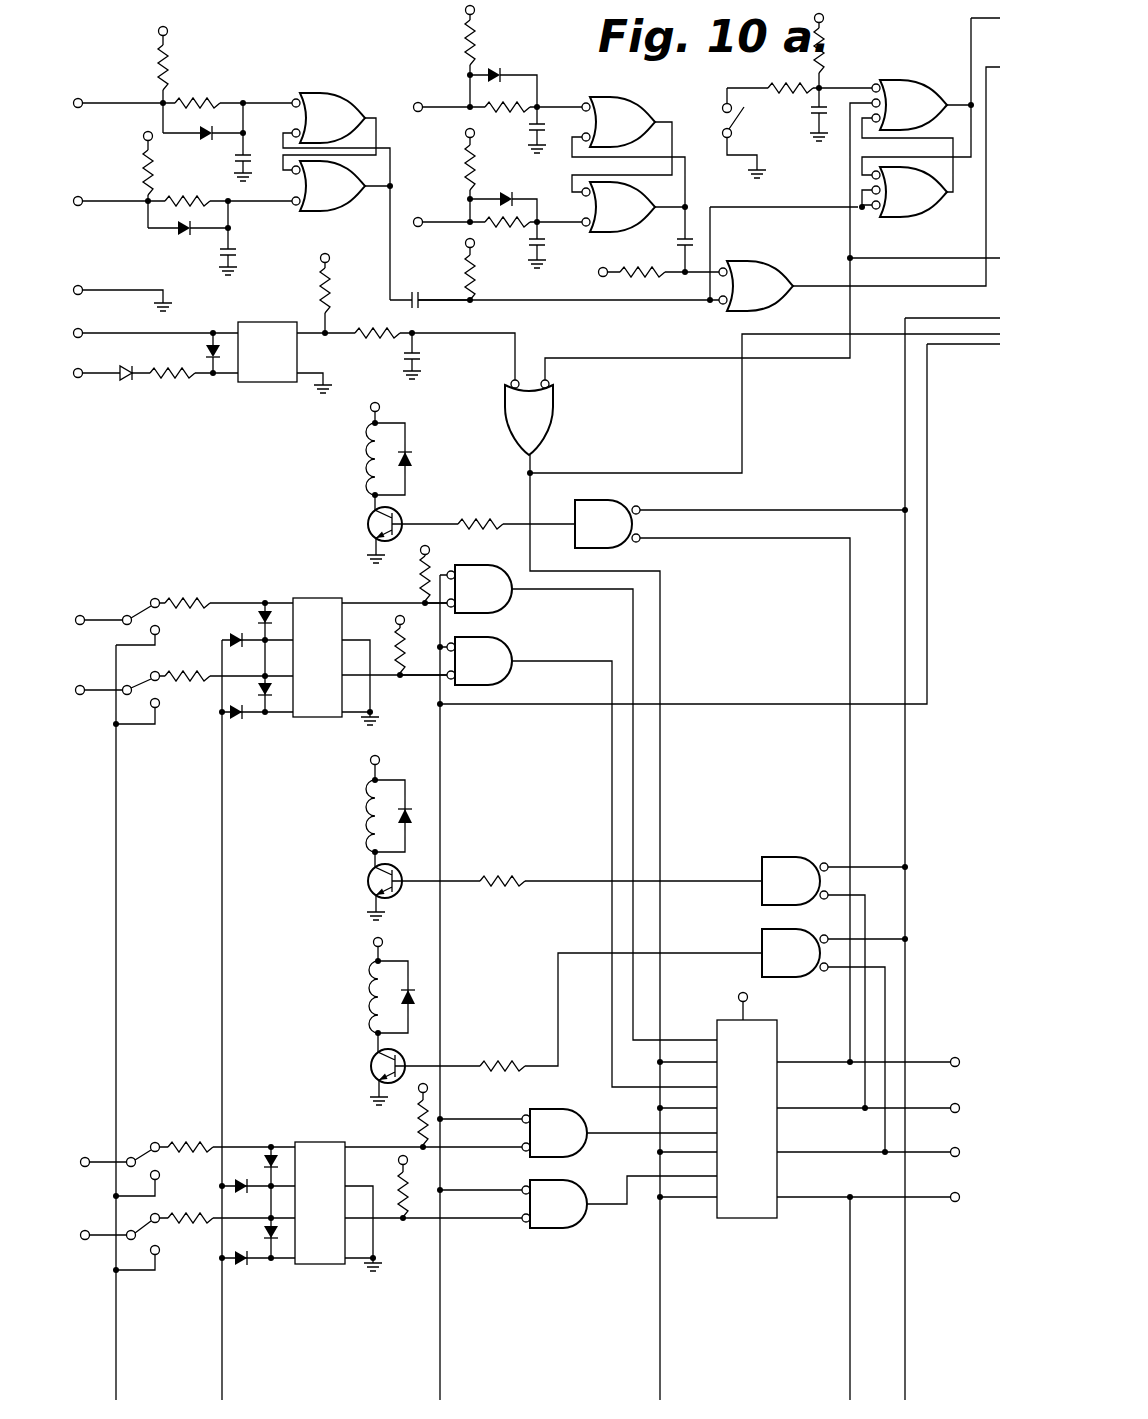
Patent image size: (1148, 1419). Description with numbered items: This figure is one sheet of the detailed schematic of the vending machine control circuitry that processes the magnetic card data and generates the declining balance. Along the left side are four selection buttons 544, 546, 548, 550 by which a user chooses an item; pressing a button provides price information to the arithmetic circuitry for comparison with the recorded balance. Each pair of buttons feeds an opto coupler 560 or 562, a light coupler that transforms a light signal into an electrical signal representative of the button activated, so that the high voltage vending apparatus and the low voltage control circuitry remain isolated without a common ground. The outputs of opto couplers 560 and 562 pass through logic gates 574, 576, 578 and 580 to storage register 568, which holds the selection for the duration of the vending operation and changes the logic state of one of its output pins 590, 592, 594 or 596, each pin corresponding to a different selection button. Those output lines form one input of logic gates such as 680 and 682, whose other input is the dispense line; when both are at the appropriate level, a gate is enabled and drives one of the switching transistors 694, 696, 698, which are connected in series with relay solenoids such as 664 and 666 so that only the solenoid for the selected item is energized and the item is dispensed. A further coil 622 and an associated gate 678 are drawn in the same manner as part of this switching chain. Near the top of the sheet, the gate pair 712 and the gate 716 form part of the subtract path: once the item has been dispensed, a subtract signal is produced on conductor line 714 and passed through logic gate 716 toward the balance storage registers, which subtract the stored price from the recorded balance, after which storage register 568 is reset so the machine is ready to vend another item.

The cross-coupled NOR gate latch 712 is at (340, 95).
The conductor line 714 is at (390, 242).
The logic gate 716 is at (770, 266).
The relay coil 622 is at (360, 449).
The switching transistor 694 is at (364, 525).
The inverter gate 678 is at (593, 500).
The logic gate 574 is at (474, 565).
The logic gate 576 is at (507, 640).
The logic gate 578 is at (582, 1110).
The logic gate 580 is at (574, 1180).
The selection button 544 is at (141, 596).
The selection button 546 is at (146, 673).
The selection button 548 is at (138, 1143).
The selection button 550 is at (144, 1219).
The opto coupler 560 is at (310, 598).
The opto coupler 562 is at (315, 1142).
The relay solenoid 664 is at (360, 805).
The relay solenoid 666 is at (360, 990).
The switching transistor 696 is at (367, 882).
The switching transistor 698 is at (372, 1067).
The logic gate 680 is at (769, 857).
The logic gate 682 is at (770, 931).
The storage register 568 is at (779, 1026).
The output pin 590 is at (947, 1061).
The output pin 592 is at (947, 1107).
The output pin 594 is at (947, 1151).
The output pin 596 is at (947, 1196).